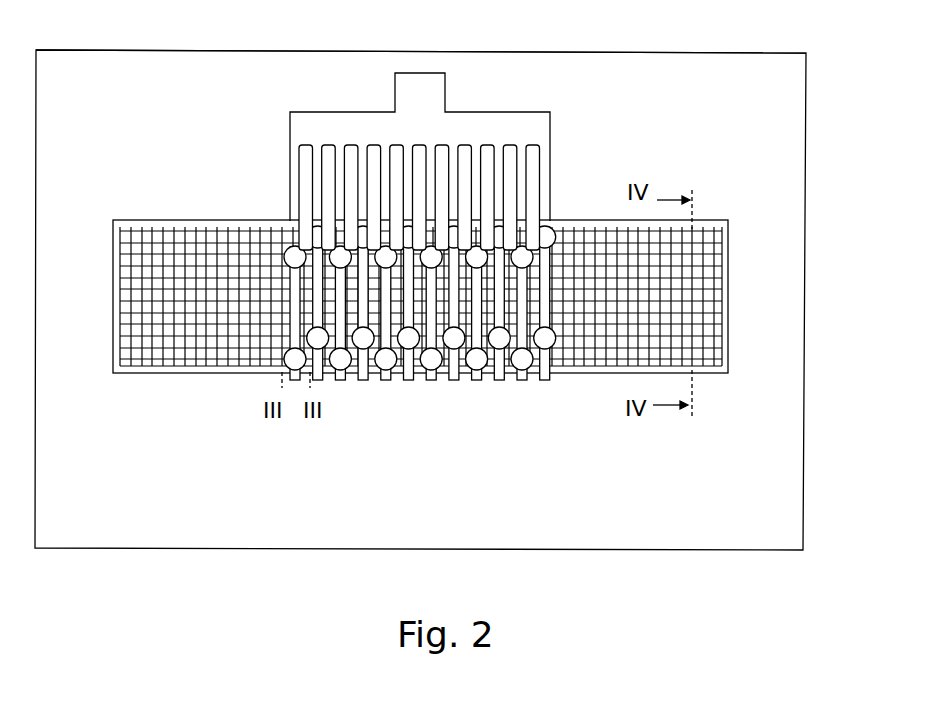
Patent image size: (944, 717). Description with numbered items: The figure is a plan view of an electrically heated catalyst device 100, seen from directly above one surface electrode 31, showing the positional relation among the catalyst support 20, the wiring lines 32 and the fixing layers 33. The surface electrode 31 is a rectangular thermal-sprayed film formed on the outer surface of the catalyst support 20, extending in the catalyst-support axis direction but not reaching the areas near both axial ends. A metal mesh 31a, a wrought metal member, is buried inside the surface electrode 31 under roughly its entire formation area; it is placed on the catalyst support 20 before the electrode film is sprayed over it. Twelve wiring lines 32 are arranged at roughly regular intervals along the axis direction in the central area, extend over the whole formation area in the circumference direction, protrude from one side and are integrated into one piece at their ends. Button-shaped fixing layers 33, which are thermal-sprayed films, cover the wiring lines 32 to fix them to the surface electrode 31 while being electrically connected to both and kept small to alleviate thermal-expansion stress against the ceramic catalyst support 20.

The electrically heated catalyst device 100 is at (840, 96).
The catalyst support 20 is at (803, 500).
The surface electrode 31 is at (718, 220).
The metal mesh 31a is at (720, 238).
The wiring line 32 is at (552, 163).
The fixing layer 33 is at (380, 377).